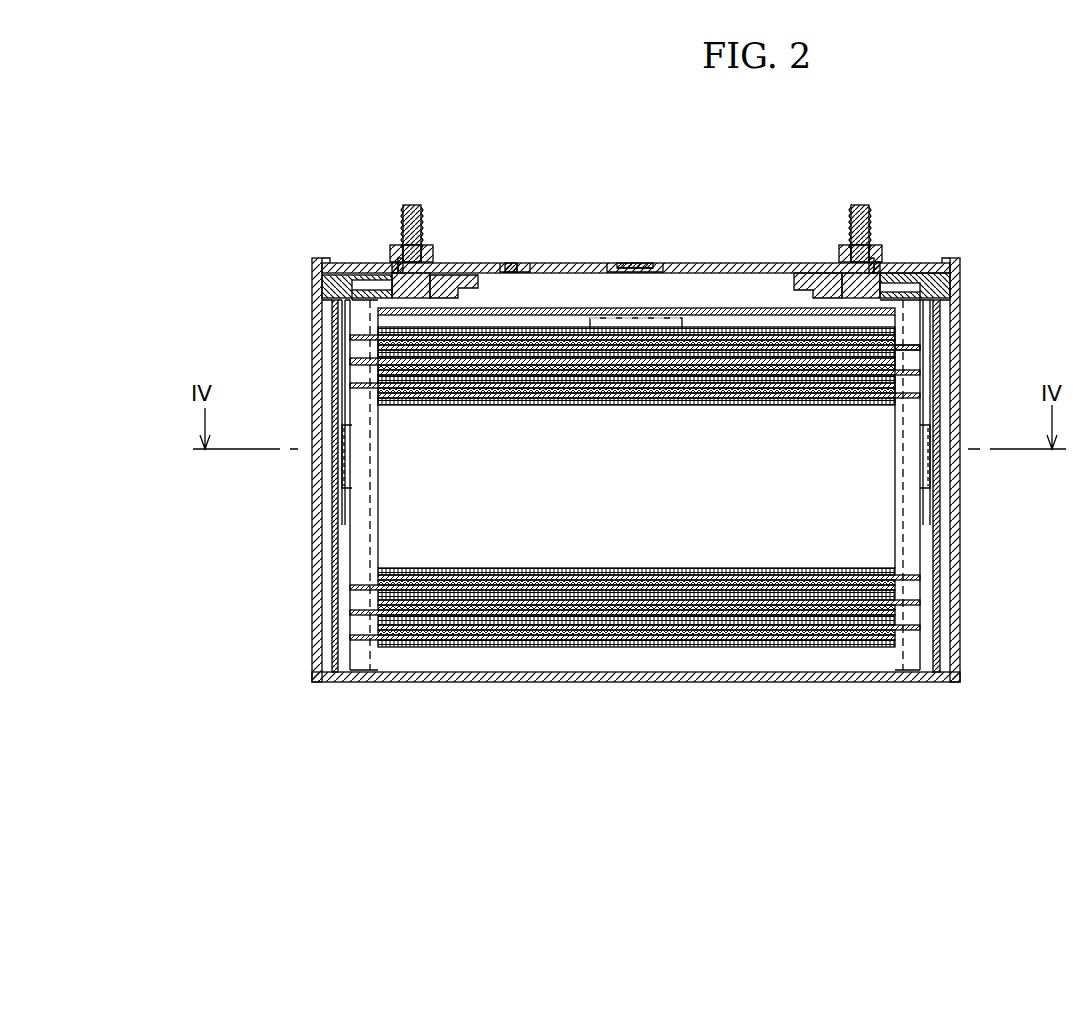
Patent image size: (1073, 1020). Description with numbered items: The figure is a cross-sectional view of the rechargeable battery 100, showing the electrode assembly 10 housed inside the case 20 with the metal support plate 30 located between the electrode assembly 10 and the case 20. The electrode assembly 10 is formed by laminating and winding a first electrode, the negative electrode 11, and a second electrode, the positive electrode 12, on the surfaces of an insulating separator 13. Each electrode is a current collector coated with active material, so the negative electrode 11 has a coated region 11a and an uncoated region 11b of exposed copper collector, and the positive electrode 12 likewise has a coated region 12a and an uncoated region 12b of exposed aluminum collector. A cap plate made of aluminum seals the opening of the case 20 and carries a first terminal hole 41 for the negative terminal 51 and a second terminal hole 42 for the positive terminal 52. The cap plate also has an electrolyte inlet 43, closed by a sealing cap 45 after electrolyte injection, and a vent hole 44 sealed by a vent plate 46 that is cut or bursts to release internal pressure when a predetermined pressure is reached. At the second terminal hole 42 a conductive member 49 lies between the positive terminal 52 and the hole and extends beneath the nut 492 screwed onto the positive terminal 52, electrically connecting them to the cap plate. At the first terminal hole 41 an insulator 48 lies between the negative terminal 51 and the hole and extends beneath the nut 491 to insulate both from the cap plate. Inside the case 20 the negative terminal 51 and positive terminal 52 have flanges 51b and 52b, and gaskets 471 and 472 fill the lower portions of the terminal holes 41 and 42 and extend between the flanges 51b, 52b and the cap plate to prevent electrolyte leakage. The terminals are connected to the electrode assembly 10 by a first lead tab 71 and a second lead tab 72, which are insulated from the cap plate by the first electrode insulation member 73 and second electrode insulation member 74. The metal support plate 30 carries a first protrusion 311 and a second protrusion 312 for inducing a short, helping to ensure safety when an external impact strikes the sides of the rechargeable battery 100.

The rechargeable battery 100 is at (650, 128).
The electrode assembly 10 is at (634, 546).
The first electrode 11 is at (649, 564).
The coated region 11a is at (848, 643).
The uncoated region 11b is at (907, 630).
The second electrode 12 is at (621, 555).
The coated region 12a is at (441, 640).
The uncoated region 12b is at (455, 743).
The separator 13 is at (640, 617).
The case 20 is at (474, 258).
The metal support plate 30 is at (700, 263).
The first terminal hole 41 is at (852, 256).
The second terminal hole 42 is at (415, 249).
The electrolyte inlet 43 is at (513, 273).
The vent hole 44 is at (645, 263).
The sealing cap 45 is at (511, 263).
The vent plate 46 is at (622, 263).
The insulator 48 is at (888, 262).
The conductive member 49 is at (394, 262).
The gasket 471 is at (797, 272).
The gasket 472 is at (405, 276).
The nut 491 is at (876, 260).
The nut 492 is at (401, 258).
The first terminal 51 is at (858, 205).
The flange 51b is at (820, 280).
The second terminal 52 is at (413, 205).
The flange 52b is at (395, 280).
The first lead tab 71 is at (905, 300).
The second lead tab 72 is at (355, 293).
The first electrode insulation member 73 is at (948, 294).
The second electrode insulation member 74 is at (333, 289).
The first protrusion 311 is at (930, 482).
The second protrusion 312 is at (342, 470).